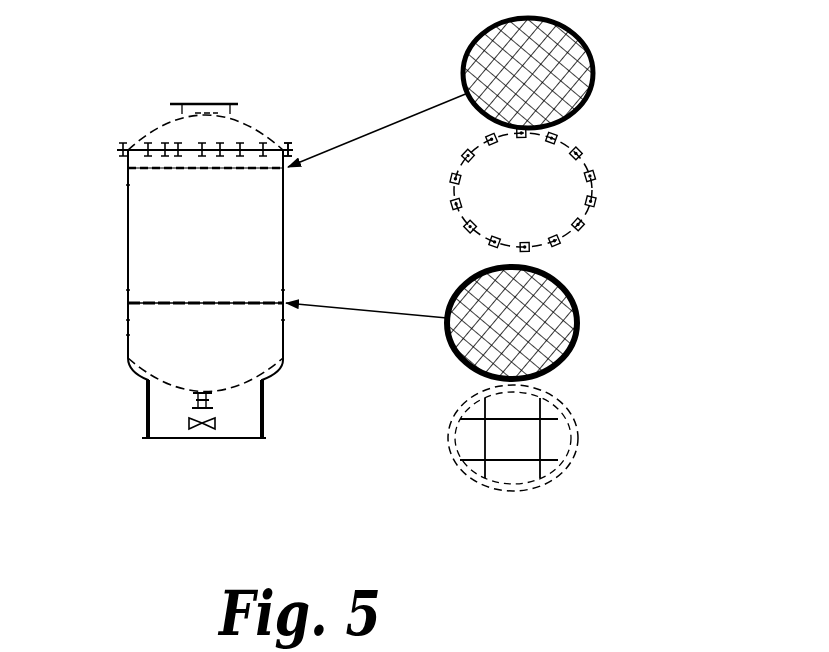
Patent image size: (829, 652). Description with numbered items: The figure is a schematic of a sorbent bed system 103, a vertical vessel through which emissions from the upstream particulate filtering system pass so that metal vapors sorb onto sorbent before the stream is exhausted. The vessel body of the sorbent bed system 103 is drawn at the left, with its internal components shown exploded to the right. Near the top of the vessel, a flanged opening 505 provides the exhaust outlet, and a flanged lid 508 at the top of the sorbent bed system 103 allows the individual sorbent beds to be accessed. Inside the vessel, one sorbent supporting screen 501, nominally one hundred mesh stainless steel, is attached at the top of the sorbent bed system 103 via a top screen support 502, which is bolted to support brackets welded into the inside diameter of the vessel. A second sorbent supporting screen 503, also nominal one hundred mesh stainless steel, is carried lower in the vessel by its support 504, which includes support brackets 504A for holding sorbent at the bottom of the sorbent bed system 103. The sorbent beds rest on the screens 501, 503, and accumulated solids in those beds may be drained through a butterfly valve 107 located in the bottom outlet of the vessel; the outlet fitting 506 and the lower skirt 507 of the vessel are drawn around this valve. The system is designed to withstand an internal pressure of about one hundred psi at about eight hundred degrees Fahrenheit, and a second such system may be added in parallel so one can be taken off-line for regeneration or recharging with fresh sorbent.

The sorbent bed system 103 is at (88, 189).
The butterfly valve 107 is at (190, 423).
The sorbent supporting screen 501 is at (598, 63).
The top screen support 502 is at (587, 165).
The sorbent supporting screen 503 is at (577, 310).
The support 504 is at (578, 417).
The support brackets 504A is at (507, 460).
The flanged opening 505 is at (210, 100).
The outlet nozzle assembly 506 is at (210, 398).
The support skirt 507 is at (148, 413).
The flanged lid 508 is at (297, 143).